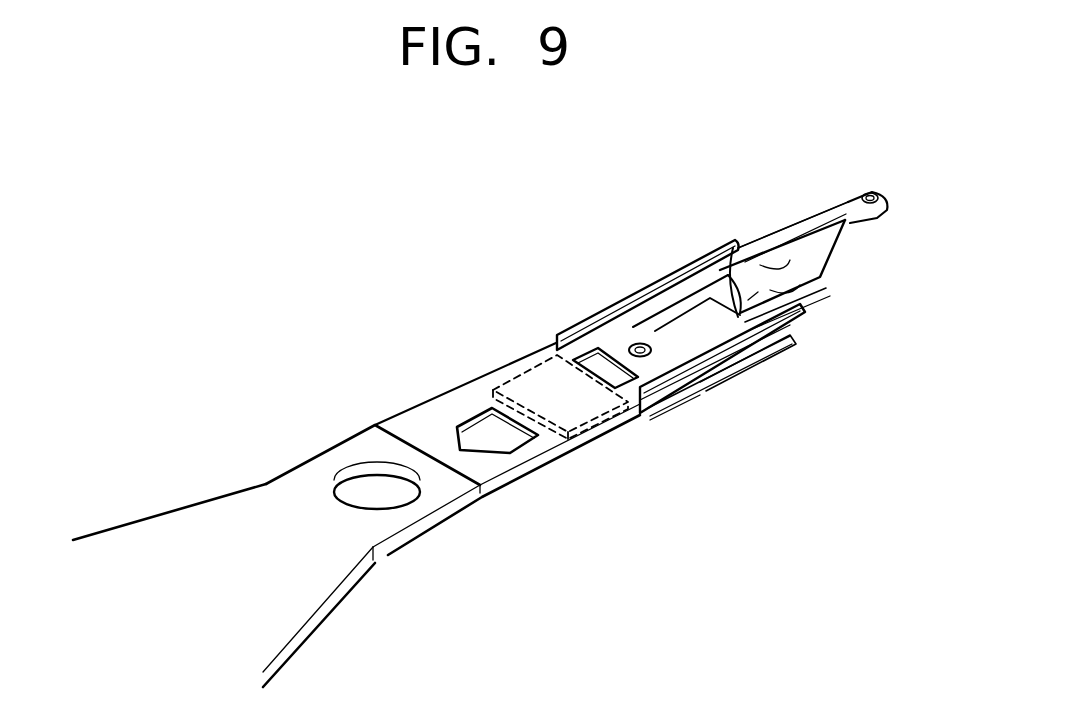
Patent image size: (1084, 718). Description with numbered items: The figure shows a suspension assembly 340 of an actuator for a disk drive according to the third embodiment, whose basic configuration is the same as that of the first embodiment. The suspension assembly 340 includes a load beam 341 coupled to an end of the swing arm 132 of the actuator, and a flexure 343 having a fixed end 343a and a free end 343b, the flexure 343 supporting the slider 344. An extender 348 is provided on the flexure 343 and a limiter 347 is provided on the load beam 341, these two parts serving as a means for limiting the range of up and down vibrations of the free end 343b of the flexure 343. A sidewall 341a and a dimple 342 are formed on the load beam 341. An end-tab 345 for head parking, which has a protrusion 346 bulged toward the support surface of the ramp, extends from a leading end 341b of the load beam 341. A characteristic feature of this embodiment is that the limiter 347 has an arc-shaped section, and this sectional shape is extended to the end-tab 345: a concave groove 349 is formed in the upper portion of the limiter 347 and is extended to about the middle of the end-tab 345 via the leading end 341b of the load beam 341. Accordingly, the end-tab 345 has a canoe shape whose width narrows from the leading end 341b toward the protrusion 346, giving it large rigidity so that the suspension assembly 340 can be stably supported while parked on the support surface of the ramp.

The swing arm 132 is at (197, 520).
The suspension assembly 340 is at (522, 250).
The load beam 341 is at (522, 358).
The sidewall 341a is at (677, 276).
The leading end of the load beam 341b is at (760, 247).
The dimple 342 is at (637, 343).
The flexure 343 is at (681, 424).
The fixed end 343a is at (583, 417).
The free end 343b is at (773, 353).
The slider 344 is at (668, 400).
The end-tab 345 is at (825, 190).
The protrusion 346 is at (875, 192).
The limiter 347 is at (797, 298).
The extender 348 is at (778, 305).
The concave groove 349 is at (810, 259).